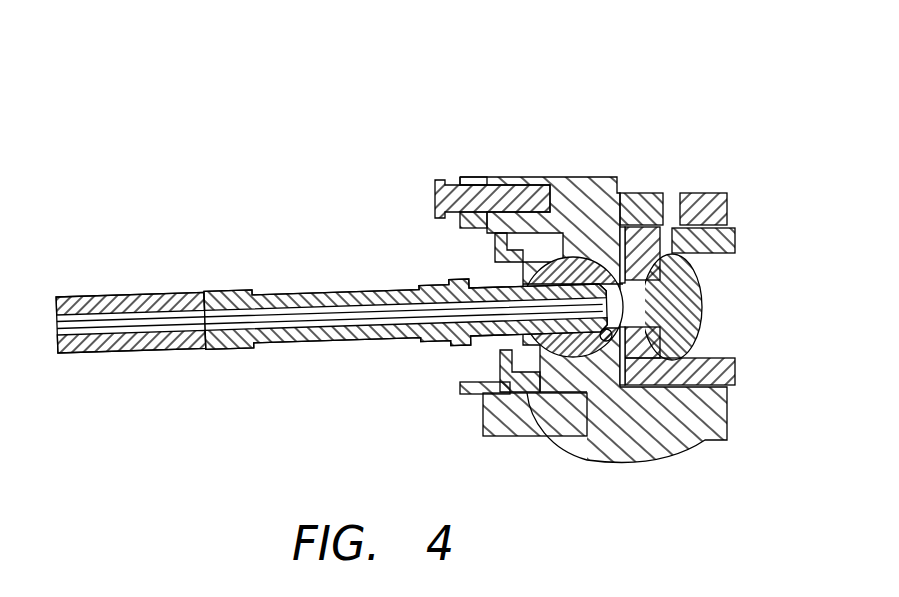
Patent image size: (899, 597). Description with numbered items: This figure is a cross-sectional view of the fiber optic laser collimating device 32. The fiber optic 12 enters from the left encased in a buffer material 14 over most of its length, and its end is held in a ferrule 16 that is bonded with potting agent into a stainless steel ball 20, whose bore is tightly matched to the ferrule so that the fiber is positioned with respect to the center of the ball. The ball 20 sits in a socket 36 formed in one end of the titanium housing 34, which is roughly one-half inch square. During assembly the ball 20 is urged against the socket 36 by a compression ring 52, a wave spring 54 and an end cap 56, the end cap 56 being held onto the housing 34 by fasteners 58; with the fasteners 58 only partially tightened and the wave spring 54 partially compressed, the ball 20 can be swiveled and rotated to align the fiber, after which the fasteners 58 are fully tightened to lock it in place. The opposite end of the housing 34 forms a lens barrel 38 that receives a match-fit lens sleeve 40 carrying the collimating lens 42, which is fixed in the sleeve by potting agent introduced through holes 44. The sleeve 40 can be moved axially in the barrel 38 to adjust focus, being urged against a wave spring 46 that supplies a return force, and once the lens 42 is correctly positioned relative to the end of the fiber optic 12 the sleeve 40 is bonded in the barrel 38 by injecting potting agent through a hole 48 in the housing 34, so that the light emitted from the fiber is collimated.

The fiber optic 12 is at (365, 340).
The buffer material 14 is at (356, 290).
The ferrule 16 is at (298, 296).
The stainless steel ball 20 is at (617, 180).
The fiber optic laser collimating device 32 is at (530, 71).
The housing 34 is at (722, 440).
The socket 36 is at (588, 385).
The lens barrel 38 is at (693, 193).
The lens sleeve 40 is at (737, 245).
The collimating lens 42 is at (702, 295).
The holes 44 is at (660, 228).
The wave spring 46 is at (627, 385).
The hole 48 is at (677, 197).
The compression ring 52 is at (560, 248).
The wave spring 54 is at (503, 410).
The end cap 56 is at (462, 388).
The fasteners 58 is at (440, 184).